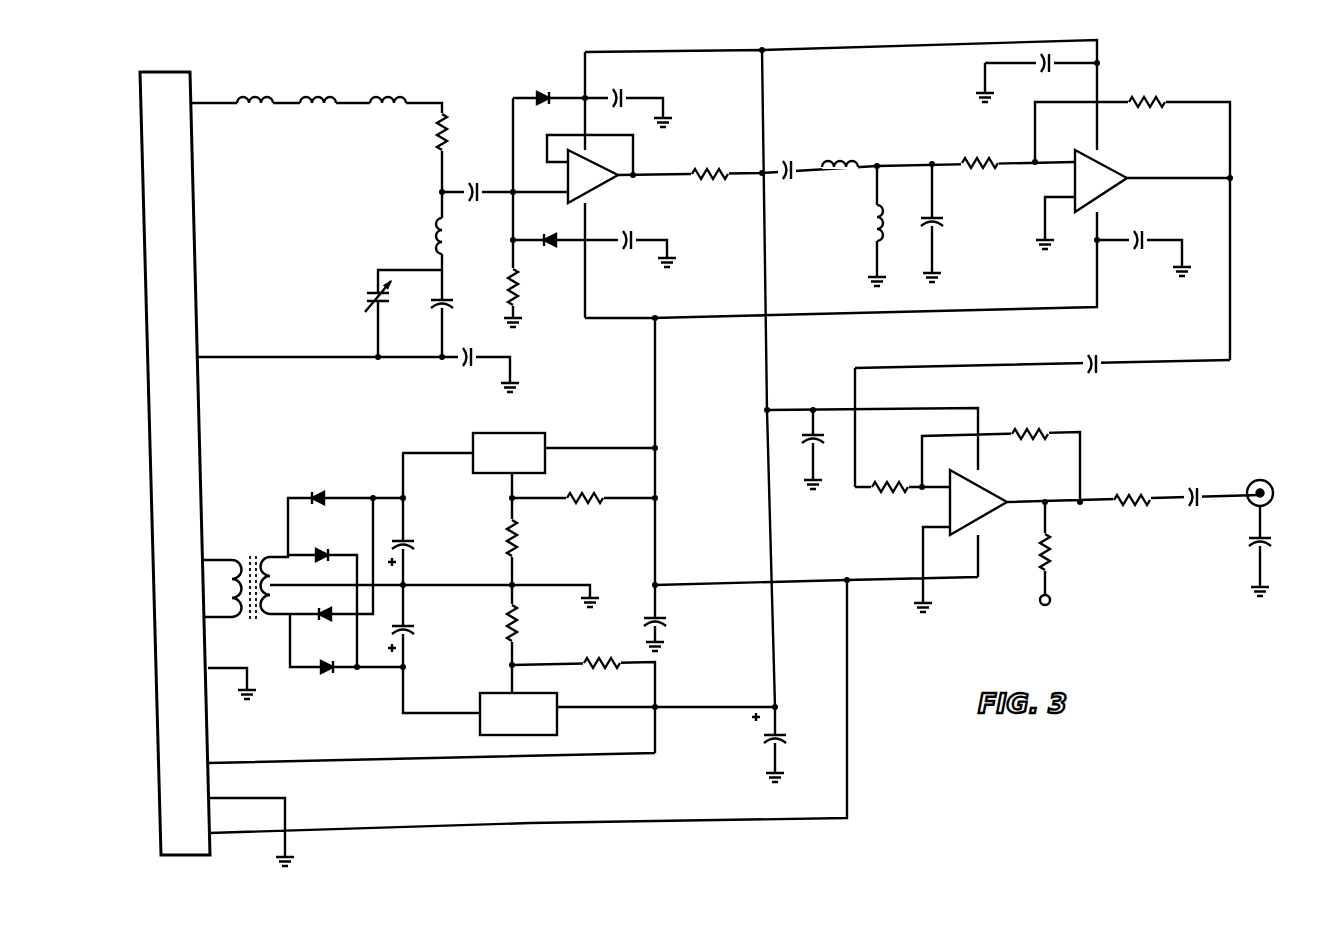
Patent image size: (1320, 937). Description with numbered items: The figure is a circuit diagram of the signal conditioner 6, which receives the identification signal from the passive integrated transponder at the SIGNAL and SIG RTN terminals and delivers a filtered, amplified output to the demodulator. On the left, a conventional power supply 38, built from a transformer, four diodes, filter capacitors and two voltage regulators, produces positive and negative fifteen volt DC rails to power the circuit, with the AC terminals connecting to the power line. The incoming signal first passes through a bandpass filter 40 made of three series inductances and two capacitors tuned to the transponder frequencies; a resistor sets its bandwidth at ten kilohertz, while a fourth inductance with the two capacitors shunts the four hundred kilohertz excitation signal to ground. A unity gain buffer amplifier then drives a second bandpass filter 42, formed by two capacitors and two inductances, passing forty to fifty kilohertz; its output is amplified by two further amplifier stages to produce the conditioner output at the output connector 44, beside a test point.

The signal conditioner 6 is at (687, 453).
The power supply 38 is at (322, 688).
The bandpass filter 40 is at (345, 201).
The bandpass filter 42 is at (822, 256).
The output connector 44 is at (1270, 483).